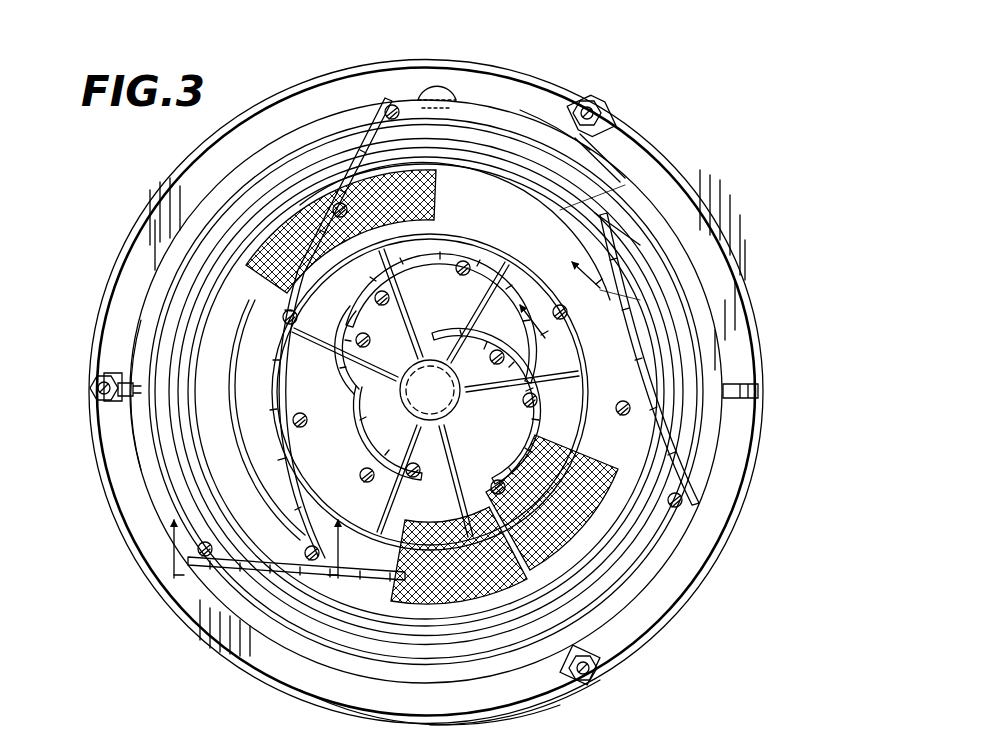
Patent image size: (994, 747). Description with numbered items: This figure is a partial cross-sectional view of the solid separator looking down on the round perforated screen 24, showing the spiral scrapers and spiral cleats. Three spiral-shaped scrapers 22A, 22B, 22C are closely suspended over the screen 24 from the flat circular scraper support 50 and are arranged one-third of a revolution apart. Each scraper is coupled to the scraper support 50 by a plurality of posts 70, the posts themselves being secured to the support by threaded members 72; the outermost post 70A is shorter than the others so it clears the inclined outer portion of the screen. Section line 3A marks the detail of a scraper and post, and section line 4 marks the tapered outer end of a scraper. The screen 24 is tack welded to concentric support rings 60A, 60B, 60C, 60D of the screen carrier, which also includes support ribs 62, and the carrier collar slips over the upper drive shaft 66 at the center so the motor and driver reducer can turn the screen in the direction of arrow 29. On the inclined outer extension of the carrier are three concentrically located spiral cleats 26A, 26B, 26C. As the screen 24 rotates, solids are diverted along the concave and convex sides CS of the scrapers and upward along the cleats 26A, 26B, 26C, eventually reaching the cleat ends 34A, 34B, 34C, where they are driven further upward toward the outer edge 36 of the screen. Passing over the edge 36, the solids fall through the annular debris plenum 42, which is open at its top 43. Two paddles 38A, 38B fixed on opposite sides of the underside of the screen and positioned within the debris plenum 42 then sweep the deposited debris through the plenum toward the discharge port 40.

The spiral-shaped scraper 22A is at (190, 215).
The spiral-shaped scraper 22B is at (343, 630).
The spiral-shaped scraper 22C is at (700, 285).
The screen 24 is at (290, 207).
The spiral-shaped cleat 26A is at (328, 168).
The spiral-shaped cleat 26B is at (630, 157).
The spiral-shaped cleat 26C is at (660, 175).
The arrow 29 is at (167, 247).
The end of cleat 34A is at (602, 110).
The end of cleat 34B is at (104, 402).
The end of cleat 34C is at (605, 668).
The outer edge 36 is at (510, 100).
The paddle 38A is at (120, 385).
The paddle 38B is at (758, 390).
The discharge port 40 is at (440, 72).
The annular debris plenum 42 is at (288, 693).
The top of debris plenum 43 is at (612, 152).
The scraper support 50 is at (515, 713).
The concentric support ring 60A is at (425, 333).
The concentric support ring 60B is at (660, 235).
The concentric support ring 60C is at (420, 244).
The concentric support ring 60D is at (457, 190).
The support rib 62 is at (537, 187).
The upper drive shaft 66 is at (430, 390).
The post 70 is at (297, 318).
The outermost post 70A is at (392, 104).
The threaded member 72 is at (632, 746).
The convex side CS is at (350, 368).
The section line 3A- 3A is at (575, 307).
The section line 4- 4 is at (255, 565).